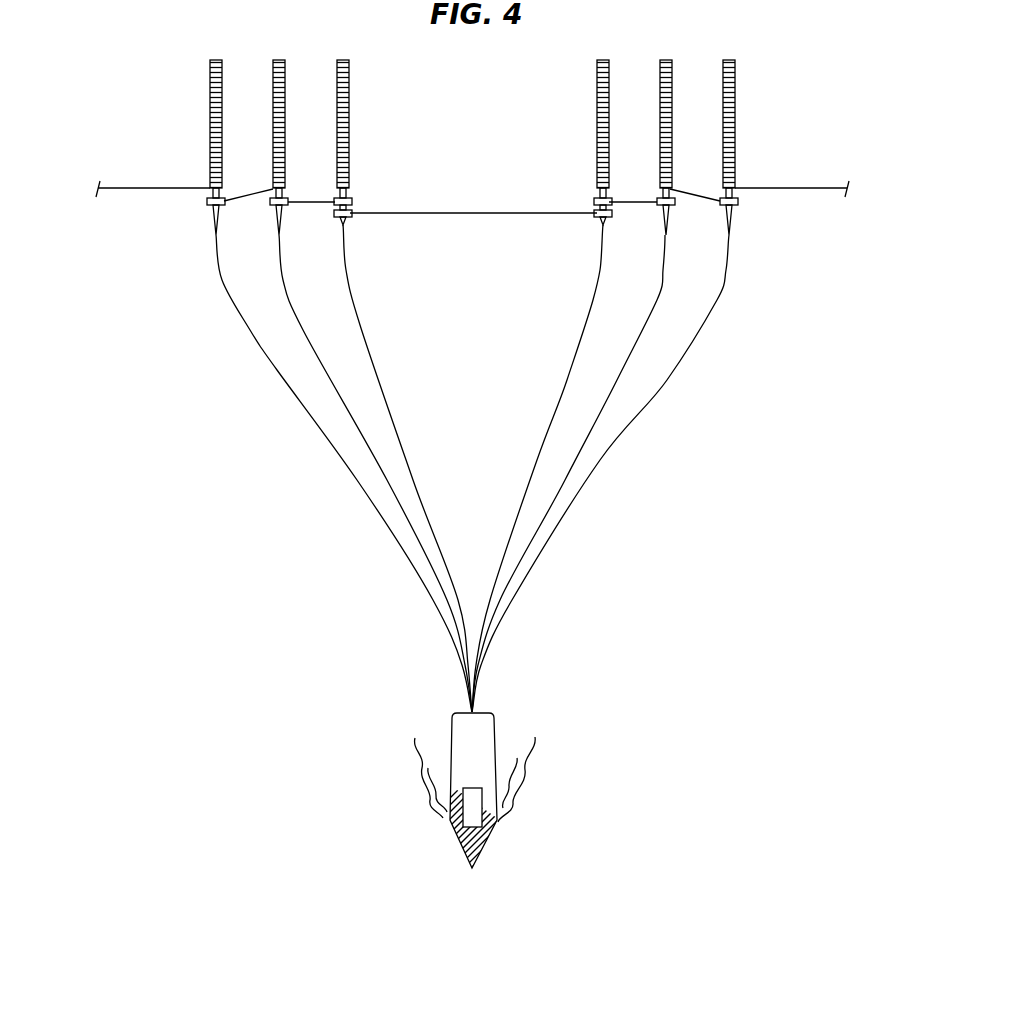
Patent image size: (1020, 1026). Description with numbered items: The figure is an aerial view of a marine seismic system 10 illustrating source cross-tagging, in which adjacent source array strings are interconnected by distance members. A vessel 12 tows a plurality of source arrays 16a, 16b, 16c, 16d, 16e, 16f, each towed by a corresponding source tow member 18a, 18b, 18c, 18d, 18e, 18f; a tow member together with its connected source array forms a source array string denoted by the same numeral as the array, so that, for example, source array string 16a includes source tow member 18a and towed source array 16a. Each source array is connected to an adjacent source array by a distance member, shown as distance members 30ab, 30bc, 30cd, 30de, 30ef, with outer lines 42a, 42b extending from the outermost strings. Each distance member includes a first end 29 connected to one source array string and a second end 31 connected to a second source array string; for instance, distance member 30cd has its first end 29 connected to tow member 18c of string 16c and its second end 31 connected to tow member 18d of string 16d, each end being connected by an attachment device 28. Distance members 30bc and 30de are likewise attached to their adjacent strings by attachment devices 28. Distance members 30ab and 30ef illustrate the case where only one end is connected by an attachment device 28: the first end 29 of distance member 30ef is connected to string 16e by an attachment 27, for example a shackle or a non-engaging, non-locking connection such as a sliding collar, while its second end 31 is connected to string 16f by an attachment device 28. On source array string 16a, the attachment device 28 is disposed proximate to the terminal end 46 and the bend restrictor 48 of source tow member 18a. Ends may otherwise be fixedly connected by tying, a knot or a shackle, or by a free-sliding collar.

The marine seismic survey system 10 is at (308, 770).
The vessel 12 is at (462, 840).
The source array 16a is at (210, 107).
The source array 16b is at (285, 103).
The source array 16c is at (349, 90).
The source array 16d is at (597, 105).
The source array 16e is at (660, 88).
The source array 16f is at (735, 90).
The source tow member 18a is at (250, 330).
The source tow member 18b is at (310, 343).
The source tow member 18c is at (360, 325).
The source tow member 18d is at (567, 380).
The source tow member 18e is at (610, 385).
The source tow member 18f is at (668, 370).
The attachment 27 is at (652, 185).
The attachment device 28 is at (226, 191).
The first end 29 is at (358, 206).
The second end 31 is at (587, 206).
The distance member 30ab is at (251, 201).
The distance member 30bc is at (318, 201).
The distance member 30cd is at (456, 215).
The distance member 30de is at (640, 200).
The distance member 30ef is at (694, 201).
The outer spreader line 42a is at (148, 188).
The outer spreader line 42b is at (793, 188).
The terminal end 46 is at (207, 200).
The bend restrictor 48 is at (215, 226).